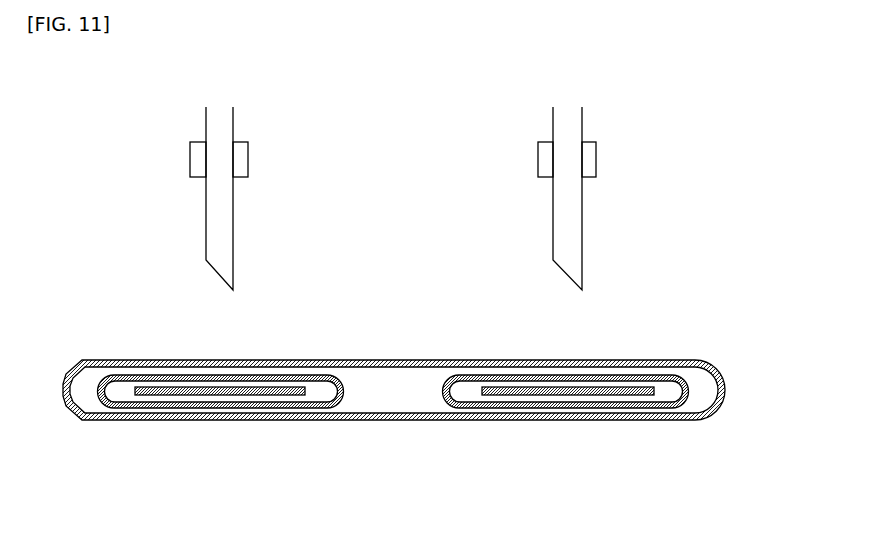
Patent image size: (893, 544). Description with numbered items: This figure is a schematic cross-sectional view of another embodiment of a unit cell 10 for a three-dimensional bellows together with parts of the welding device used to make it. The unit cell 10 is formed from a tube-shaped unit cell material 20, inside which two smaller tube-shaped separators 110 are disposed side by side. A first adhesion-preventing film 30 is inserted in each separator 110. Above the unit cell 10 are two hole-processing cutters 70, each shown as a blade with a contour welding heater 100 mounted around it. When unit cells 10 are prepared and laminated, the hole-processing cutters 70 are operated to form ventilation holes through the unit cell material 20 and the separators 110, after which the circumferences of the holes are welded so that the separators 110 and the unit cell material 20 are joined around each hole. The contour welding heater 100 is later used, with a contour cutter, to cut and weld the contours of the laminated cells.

The unit cell 10 is at (417, 371).
The unit cell material 20 is at (387, 363).
The first adhesion-preventing film 30 is at (282, 391).
The hole-processing cutter 70 is at (206, 233).
The contour welding heater 100 is at (193, 158).
The separator 110 is at (338, 398).